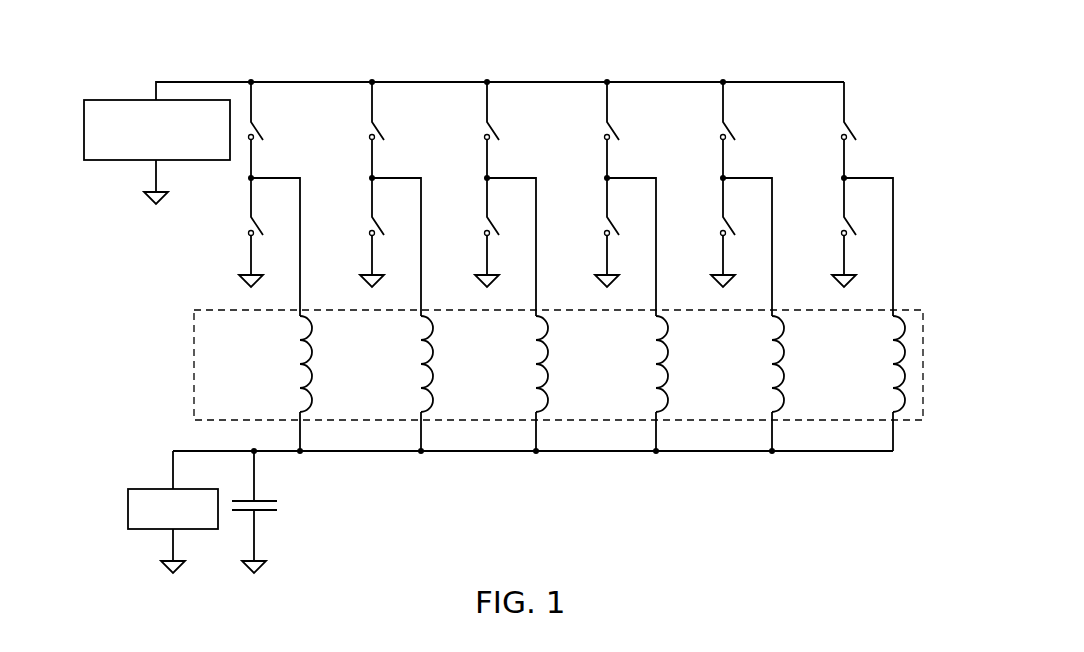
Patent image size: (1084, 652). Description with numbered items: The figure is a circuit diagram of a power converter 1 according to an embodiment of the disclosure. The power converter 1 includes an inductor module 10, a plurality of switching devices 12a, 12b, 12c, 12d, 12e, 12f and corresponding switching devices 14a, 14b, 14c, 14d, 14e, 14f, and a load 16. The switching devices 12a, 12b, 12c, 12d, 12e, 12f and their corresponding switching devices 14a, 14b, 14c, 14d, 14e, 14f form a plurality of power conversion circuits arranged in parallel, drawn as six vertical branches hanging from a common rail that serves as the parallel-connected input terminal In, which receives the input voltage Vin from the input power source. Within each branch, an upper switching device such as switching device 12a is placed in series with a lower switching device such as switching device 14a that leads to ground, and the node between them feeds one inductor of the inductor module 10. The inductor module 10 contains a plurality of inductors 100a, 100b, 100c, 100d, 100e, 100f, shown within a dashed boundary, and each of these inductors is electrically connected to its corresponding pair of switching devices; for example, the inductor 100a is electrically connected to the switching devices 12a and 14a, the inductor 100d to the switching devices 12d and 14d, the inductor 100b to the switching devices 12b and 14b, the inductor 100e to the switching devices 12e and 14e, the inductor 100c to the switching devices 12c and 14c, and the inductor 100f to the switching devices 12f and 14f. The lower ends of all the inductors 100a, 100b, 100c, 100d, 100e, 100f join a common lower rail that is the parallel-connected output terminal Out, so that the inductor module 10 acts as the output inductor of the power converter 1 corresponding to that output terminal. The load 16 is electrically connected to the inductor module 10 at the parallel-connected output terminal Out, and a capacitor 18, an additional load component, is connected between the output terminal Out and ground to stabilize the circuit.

The power converter 1 is at (786, 34).
The inductor module 10 is at (193, 348).
The switching device 12a is at (262, 127).
The switching device 12b is at (498, 127).
The switching device 12c is at (734, 127).
The switching device 12d is at (383, 127).
The switching device 12e is at (618, 127).
The switching device 12f is at (855, 127).
The switching device 14a is at (245, 222).
The switching device 14b is at (481, 222).
The switching device 14c is at (717, 222).
The switching device 14d is at (366, 222).
The switching device 14e is at (601, 222).
The switching device 14f is at (838, 222).
The inductor 100a is at (287, 350).
The inductor 100b is at (523, 350).
The inductor 100c is at (759, 350).
The inductor 100d is at (408, 350).
The inductor 100e is at (643, 350).
The inductor 100f is at (880, 350).
The load 16 is at (128, 498).
The capacitor 18 is at (278, 508).